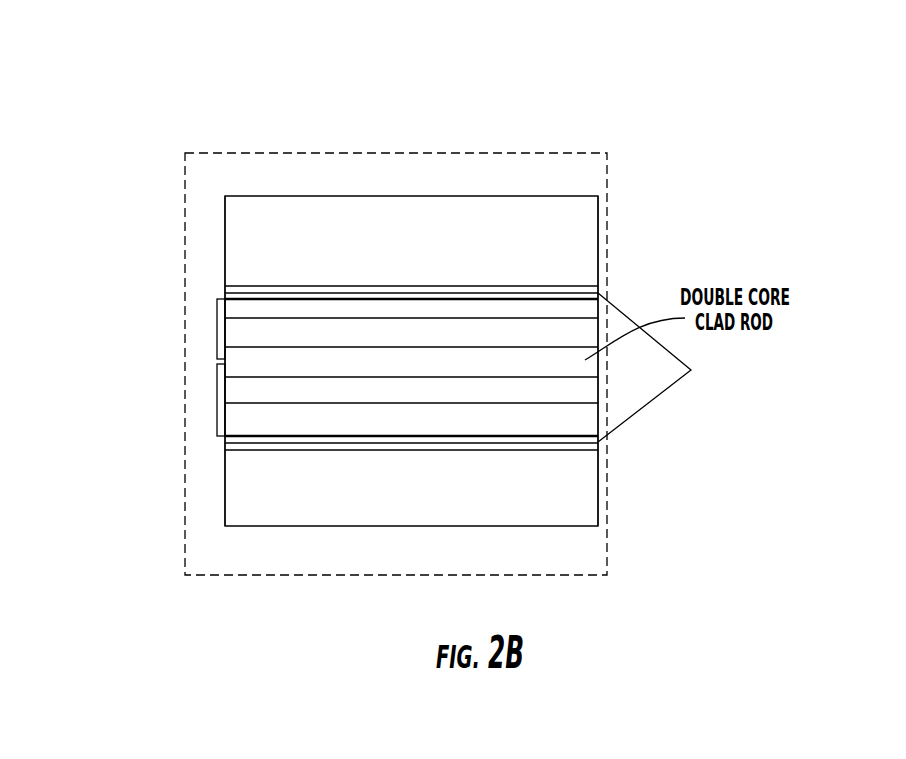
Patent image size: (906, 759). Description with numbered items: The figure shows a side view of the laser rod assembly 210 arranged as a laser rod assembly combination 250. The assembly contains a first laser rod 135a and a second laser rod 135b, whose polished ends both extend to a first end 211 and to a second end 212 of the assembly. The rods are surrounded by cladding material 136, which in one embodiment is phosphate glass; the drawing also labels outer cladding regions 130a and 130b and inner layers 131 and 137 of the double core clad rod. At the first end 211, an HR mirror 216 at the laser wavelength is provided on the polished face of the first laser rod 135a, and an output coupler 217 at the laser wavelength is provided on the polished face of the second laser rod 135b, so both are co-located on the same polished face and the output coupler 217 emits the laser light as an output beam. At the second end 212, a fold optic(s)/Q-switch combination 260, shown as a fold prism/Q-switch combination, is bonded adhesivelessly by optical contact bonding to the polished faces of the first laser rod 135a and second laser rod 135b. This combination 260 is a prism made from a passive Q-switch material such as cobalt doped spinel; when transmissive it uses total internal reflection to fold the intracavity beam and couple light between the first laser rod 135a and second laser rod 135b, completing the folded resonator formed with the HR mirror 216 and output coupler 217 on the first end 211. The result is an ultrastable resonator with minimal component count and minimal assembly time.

The laser rod assembly combination 250 is at (572, 114).
The laser rod assembly 210 is at (325, 152).
The upper outer cladding 130a is at (398, 233).
The lower outer cladding 130b is at (410, 498).
The inner cladding 131 is at (537, 289).
The cladding boundary layer 137 is at (549, 296).
The cladding material 136 is at (573, 422).
The first laser rod 135a is at (257, 336).
The second laser rod 135b is at (257, 387).
The first end 211 is at (157, 327).
The second end 212 is at (659, 327).
The HR mirror 216 is at (212, 304).
The output coupler 217 is at (212, 425).
The fold optic(s)/Q-switch combination 260 is at (668, 398).